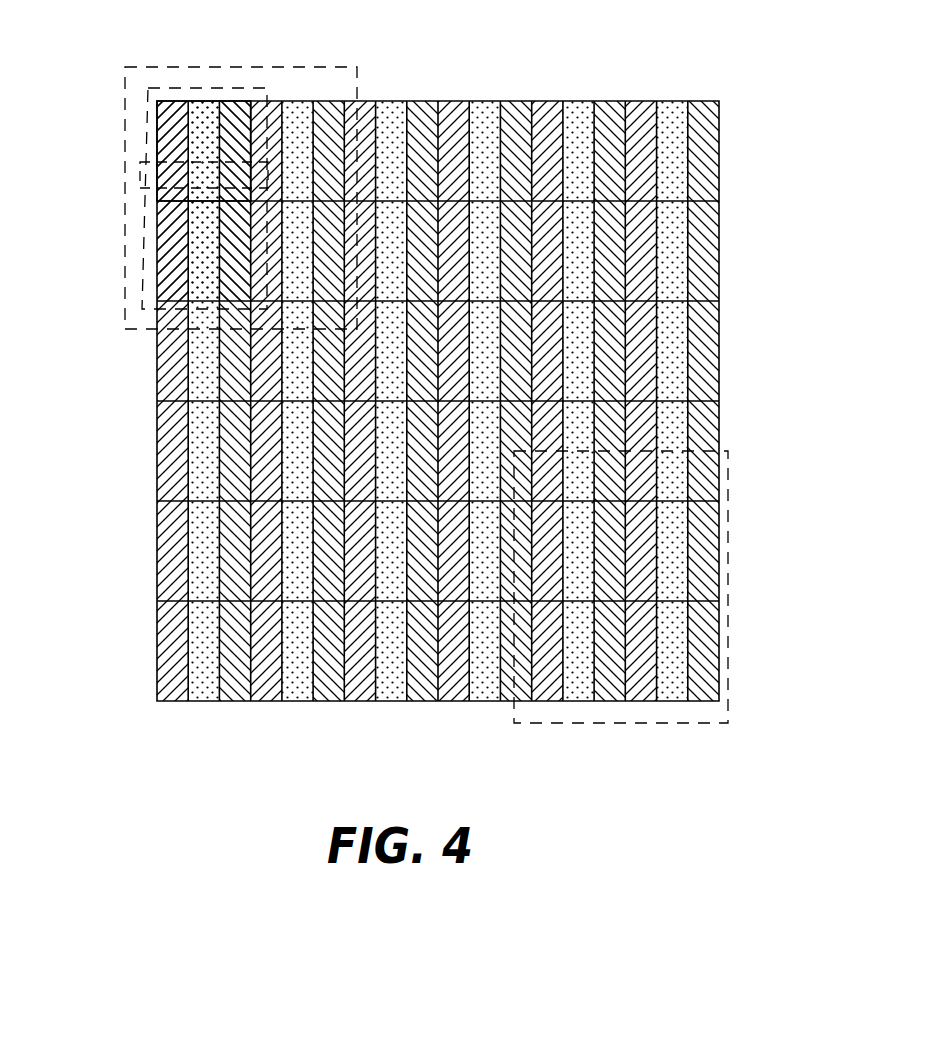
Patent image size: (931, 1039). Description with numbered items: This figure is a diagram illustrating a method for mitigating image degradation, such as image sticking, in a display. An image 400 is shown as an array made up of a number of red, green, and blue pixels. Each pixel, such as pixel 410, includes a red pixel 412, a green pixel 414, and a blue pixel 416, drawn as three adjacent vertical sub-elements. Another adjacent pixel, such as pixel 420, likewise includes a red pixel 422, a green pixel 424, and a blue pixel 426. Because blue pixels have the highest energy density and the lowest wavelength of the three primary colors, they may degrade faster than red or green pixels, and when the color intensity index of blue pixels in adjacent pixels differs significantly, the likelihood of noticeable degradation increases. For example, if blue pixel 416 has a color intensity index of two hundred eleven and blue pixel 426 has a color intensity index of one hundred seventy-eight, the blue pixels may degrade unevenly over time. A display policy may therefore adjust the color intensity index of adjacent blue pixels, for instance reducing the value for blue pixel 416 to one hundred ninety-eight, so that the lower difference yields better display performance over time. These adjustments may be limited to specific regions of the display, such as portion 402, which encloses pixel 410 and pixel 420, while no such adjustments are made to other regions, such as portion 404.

The image 400 is at (719, 120).
The portion 402 is at (357, 86).
The portion 404 is at (728, 498).
The pixel 410 is at (148, 103).
The red pixel 412 is at (164, 101).
The green pixel 414 is at (198, 101).
The blue pixel 416 is at (229, 101).
The pixel 420 is at (142, 258).
The red pixel 422 is at (163, 303).
The green pixel 424 is at (197, 303).
The blue pixel 426 is at (230, 303).